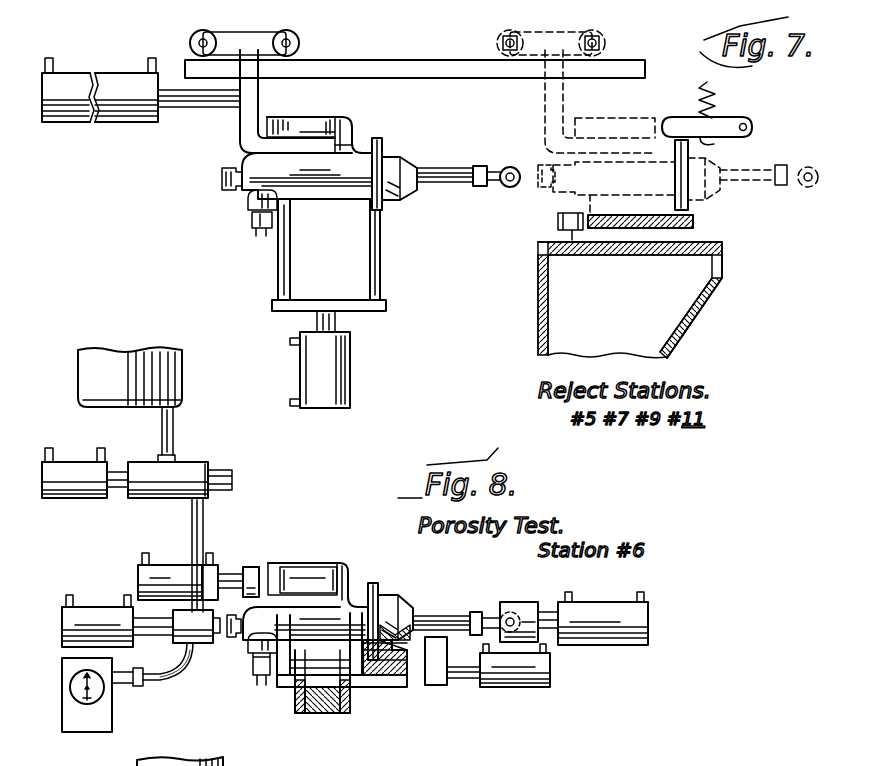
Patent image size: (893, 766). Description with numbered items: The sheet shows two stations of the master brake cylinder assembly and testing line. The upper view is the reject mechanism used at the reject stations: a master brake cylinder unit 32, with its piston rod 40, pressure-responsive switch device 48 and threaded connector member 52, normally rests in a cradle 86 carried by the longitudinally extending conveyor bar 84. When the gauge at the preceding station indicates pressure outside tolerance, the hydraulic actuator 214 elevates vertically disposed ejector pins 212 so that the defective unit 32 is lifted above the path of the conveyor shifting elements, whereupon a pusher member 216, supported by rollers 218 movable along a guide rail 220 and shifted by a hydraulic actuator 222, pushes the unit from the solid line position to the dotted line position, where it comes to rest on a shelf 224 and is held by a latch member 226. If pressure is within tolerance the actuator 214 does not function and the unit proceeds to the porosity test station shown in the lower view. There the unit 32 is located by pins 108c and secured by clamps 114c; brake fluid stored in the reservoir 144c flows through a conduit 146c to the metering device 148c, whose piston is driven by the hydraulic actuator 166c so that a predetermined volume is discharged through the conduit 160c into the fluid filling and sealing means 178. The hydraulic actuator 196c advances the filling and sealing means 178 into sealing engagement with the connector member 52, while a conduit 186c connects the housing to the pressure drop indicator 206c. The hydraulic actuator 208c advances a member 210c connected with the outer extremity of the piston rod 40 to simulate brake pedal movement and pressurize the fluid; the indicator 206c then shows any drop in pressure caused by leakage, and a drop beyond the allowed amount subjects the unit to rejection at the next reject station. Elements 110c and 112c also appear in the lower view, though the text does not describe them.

In FIG. 7, the master brake cylinder unit 32 is at (356, 131).
In FIG. 8, the master brake cylinder unit 32 is at (358, 578).
In FIG. 7, the piston rod 40 is at (450, 184).
In FIG. 8, the piston rod 40 is at (450, 622).
In FIG. 7, the pressure-responsive switch device 48 is at (252, 226).
In FIG. 8, the pressure-responsive switch device 48 is at (250, 680).
In FIG. 7, the threaded connector member 52 is at (230, 188).
In FIG. 8, the threaded connector member 52 is at (234, 637).
In FIG. 8, the longitudinally extending bar 84 is at (325, 707).
In FIG. 8, the cradles 86 is at (298, 705).
In FIG. 7, the ejector pins 212 is at (278, 273).
In FIG. 7, the hydraulic actuator 214 is at (350, 354).
In FIG. 7, the pusher member 216 is at (240, 128).
In FIG. 7, the rollers 218 is at (190, 43).
In FIG. 7, the guide rail 220 is at (505, 78).
In FIG. 7, the hydraulic actuator 222 is at (138, 113).
In FIG. 7, the shelf 224 is at (694, 221).
In FIG. 7, the latch member 226 is at (718, 140).
In FIG. 8, the locating pins 108c is at (423, 684).
In FIG. 8, the cylinder 110c is at (490, 690).
In FIG. 8, the switch 112c is at (212, 562).
In FIG. 8, the clamps 114c is at (258, 565).
In FIG. 8, the reservoir 144c is at (168, 375).
In FIG. 8, the conduit 146c is at (165, 430).
In FIG. 8, the metering device 148c is at (165, 492).
In FIG. 8, the conduit 160c is at (203, 517).
In FIG. 8, the hydraulic actuator 166c is at (82, 500).
In FIG. 8, the fluid filling and sealing means 178 is at (200, 655).
In FIG. 8, the conduit 186c is at (165, 683).
In FIG. 8, the hydraulic actuator 196c is at (97, 612).
In FIG. 8, the pressure drop indicator 206c is at (116, 722).
In FIG. 8, the hydraulic actuator 208c is at (606, 601).
In FIG. 8, the member 210c is at (526, 600).